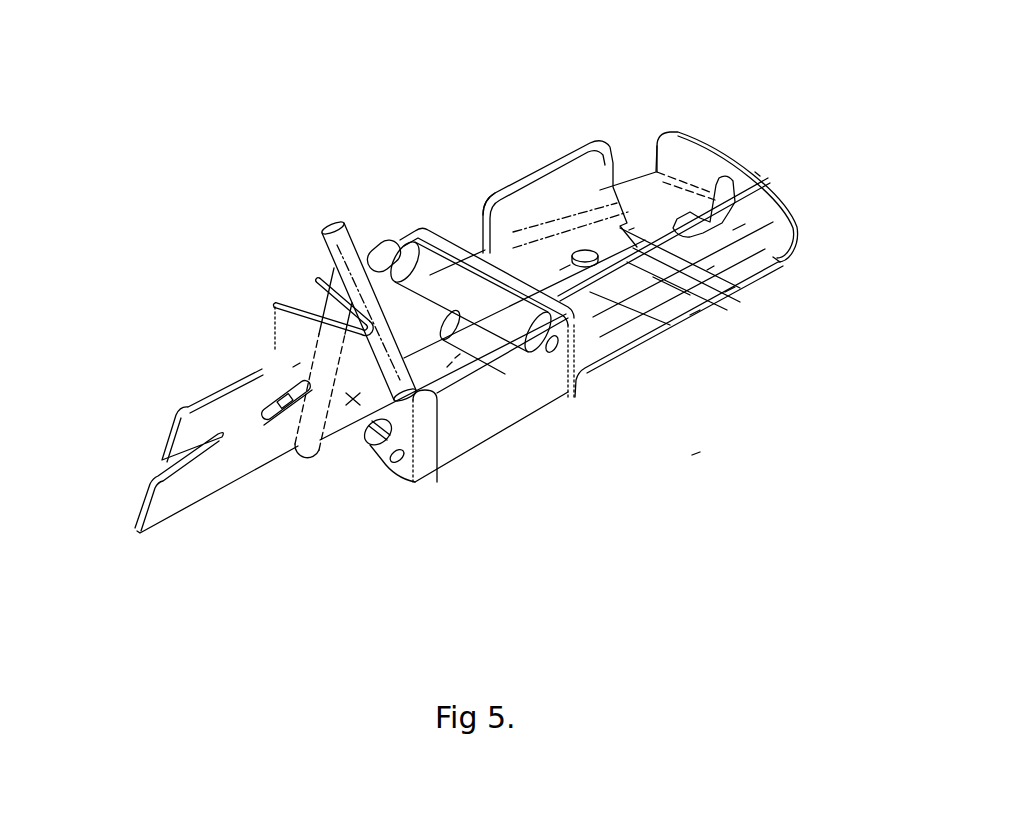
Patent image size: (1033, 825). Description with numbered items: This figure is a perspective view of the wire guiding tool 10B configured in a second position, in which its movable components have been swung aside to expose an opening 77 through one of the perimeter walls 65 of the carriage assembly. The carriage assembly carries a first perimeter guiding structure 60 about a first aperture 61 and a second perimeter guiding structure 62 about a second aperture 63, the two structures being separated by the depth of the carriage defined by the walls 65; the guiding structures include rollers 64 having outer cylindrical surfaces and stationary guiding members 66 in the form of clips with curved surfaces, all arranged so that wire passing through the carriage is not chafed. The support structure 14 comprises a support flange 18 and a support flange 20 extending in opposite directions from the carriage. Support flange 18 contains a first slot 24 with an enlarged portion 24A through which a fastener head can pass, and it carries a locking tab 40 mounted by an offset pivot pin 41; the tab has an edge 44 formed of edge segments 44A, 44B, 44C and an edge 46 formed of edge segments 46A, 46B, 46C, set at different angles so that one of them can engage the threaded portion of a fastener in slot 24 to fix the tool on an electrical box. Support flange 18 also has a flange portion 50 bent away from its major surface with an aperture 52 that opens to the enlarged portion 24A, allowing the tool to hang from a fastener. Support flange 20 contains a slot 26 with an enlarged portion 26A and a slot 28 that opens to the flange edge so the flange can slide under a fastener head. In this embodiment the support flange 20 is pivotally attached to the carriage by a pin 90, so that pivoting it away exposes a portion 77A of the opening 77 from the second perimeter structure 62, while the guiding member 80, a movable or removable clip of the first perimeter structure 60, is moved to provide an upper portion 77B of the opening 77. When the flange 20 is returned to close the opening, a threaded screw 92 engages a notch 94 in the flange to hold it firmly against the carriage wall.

The guiding tool 10B is at (692, 455).
The support structure 14 is at (772, 170).
The support flange 18 is at (690, 315).
The support flange 20 is at (245, 593).
The first slot 24 is at (725, 292).
The enlarged portion 24A is at (733, 230).
The slot 26 is at (258, 410).
The enlarged portion 26A is at (288, 396).
The slot 28 is at (165, 452).
The locking tab 40 is at (562, 162).
The pivot pin 41 is at (584, 250).
The edge 44 is at (645, 210).
The edge segment 44A is at (707, 270).
The edge segment 44B is at (773, 257).
The edge segment 44C is at (629, 230).
The edge 46 is at (555, 293).
The edge segment 46A is at (560, 270).
The edge segment 46B is at (532, 280).
The edge segment 46C is at (495, 208).
The flange portion 50 is at (755, 172).
The aperture 52 is at (727, 180).
The first perimeter guiding structure 60 is at (373, 215).
The first aperture 61 is at (447, 367).
The second perimeter guiding structure 62 is at (456, 480).
The second aperture 63 is at (455, 358).
The roller 64 is at (412, 262).
The perimeter wall 65 is at (402, 484).
The guiding member 66 is at (372, 243).
The opening 77 is at (362, 445).
The portion of the opening 77A is at (352, 458).
The upper portion of the opening 77B is at (353, 400).
The guiding member 80 is at (387, 387).
The pin 90 is at (293, 367).
The threaded screw 92 is at (412, 478).
The notch 94 is at (312, 290).